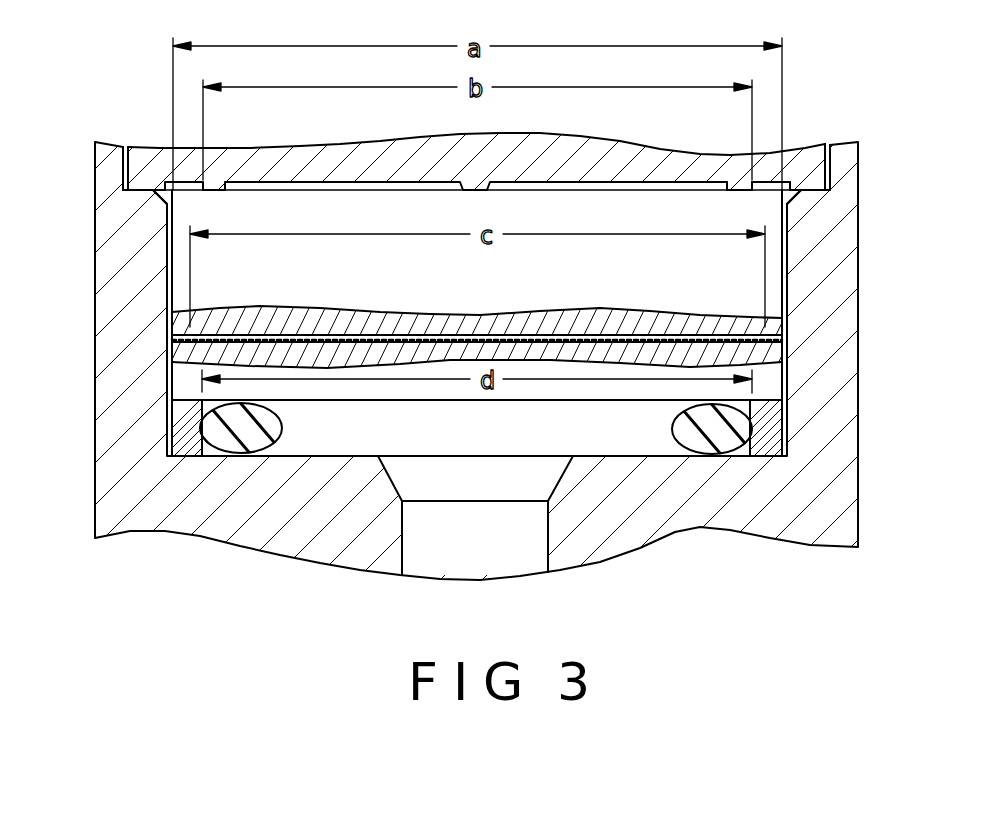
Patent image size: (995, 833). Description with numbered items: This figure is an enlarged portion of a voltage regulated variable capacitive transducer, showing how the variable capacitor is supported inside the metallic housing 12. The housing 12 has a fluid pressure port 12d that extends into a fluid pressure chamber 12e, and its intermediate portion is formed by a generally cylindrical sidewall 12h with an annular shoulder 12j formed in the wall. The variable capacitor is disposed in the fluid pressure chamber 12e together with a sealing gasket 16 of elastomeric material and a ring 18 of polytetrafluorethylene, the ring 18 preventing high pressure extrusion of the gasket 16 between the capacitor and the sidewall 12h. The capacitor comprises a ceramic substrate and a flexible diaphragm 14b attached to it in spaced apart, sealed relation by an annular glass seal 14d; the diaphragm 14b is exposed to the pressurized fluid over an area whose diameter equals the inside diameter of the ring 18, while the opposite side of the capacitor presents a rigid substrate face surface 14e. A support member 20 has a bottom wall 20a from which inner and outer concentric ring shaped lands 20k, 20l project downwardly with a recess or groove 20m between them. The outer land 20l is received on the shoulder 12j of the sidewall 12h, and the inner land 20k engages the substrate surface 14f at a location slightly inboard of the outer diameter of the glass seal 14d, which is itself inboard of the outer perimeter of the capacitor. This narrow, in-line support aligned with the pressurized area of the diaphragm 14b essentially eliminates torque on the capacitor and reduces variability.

The metallic housing 12 is at (108, 140).
The fluid pressure port 12d is at (547, 537).
The fluid pressure chamber 12e is at (424, 435).
The cylindrical sidewall 12h is at (127, 322).
The annular shoulder 12j is at (147, 192).
The diaphragm 14b is at (700, 392).
The annular seal 14d is at (278, 335).
The rigid substrate face surface 14e is at (603, 403).
The substrate surface 14f is at (408, 177).
The sealing gasket 16 is at (240, 440).
The ring 18 is at (173, 422).
The support member 20 is at (233, 157).
The bottom wall 20a is at (567, 152).
The inner ring shaped land 20k is at (742, 187).
The outer ring shaped land 20l is at (153, 178).
The recess or groove 20m is at (770, 185).